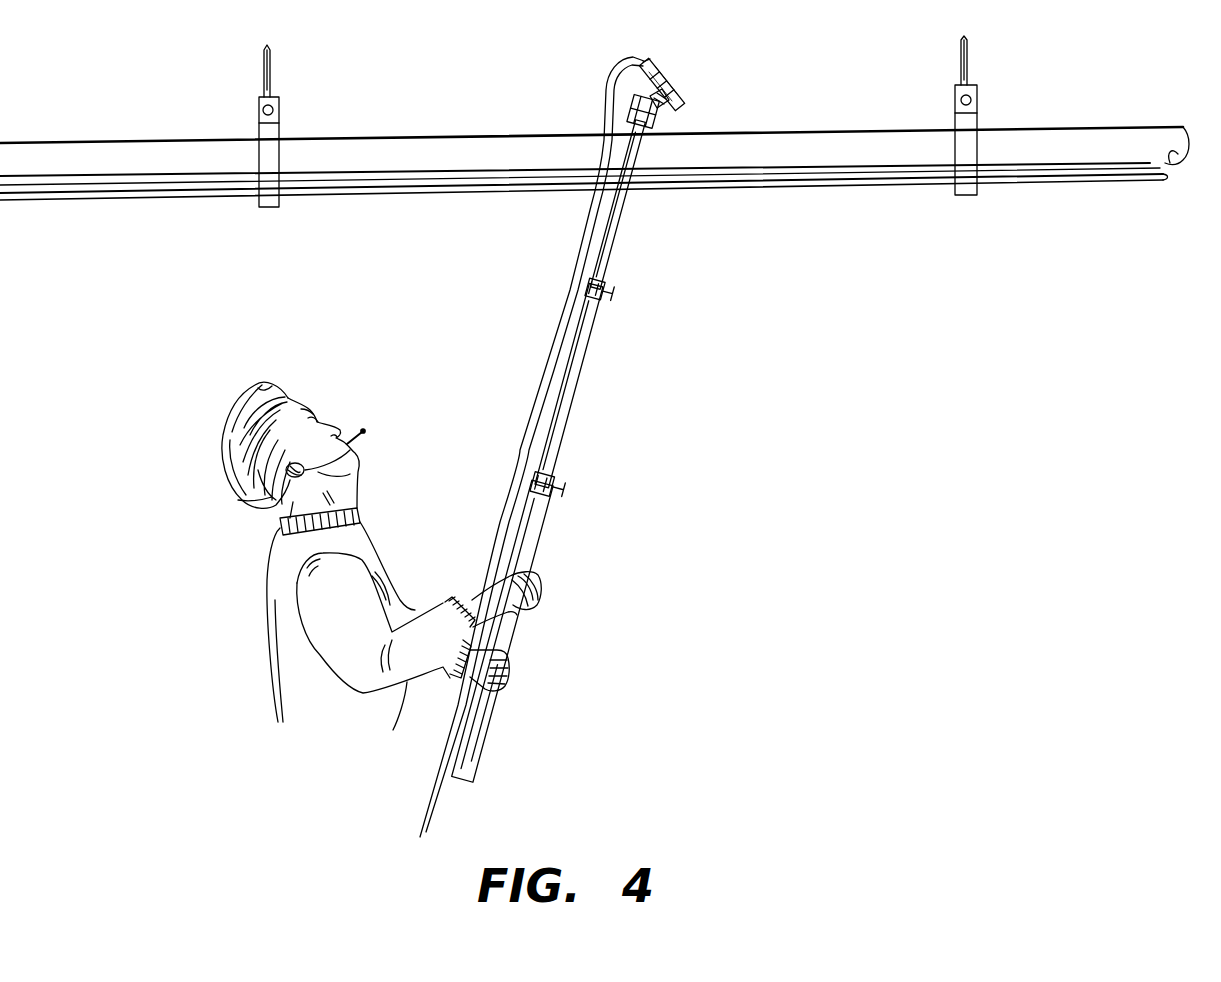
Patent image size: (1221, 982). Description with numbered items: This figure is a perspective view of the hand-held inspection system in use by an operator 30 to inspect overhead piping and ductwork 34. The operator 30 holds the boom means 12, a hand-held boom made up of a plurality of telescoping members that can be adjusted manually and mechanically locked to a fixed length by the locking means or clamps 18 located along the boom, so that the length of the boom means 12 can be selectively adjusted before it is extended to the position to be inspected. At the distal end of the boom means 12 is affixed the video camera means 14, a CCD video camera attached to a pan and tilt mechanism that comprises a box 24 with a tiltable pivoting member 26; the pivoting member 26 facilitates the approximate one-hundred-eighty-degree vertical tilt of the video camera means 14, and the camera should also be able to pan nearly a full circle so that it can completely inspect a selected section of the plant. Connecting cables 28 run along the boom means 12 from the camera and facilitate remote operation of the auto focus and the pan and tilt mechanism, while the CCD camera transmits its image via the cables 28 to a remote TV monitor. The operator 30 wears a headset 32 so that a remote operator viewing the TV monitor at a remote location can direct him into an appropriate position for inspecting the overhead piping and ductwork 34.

The boom means 12 is at (562, 452).
The video camera means 14 is at (677, 86).
The locking means or clamps 18 is at (613, 288).
The box 24 is at (633, 118).
The tiltable pivoting member 26 is at (667, 127).
The connecting cables 28 is at (607, 93).
The operator 30 is at (263, 640).
The headset 32 is at (368, 437).
The overhead piping and ductwork 34 is at (838, 130).